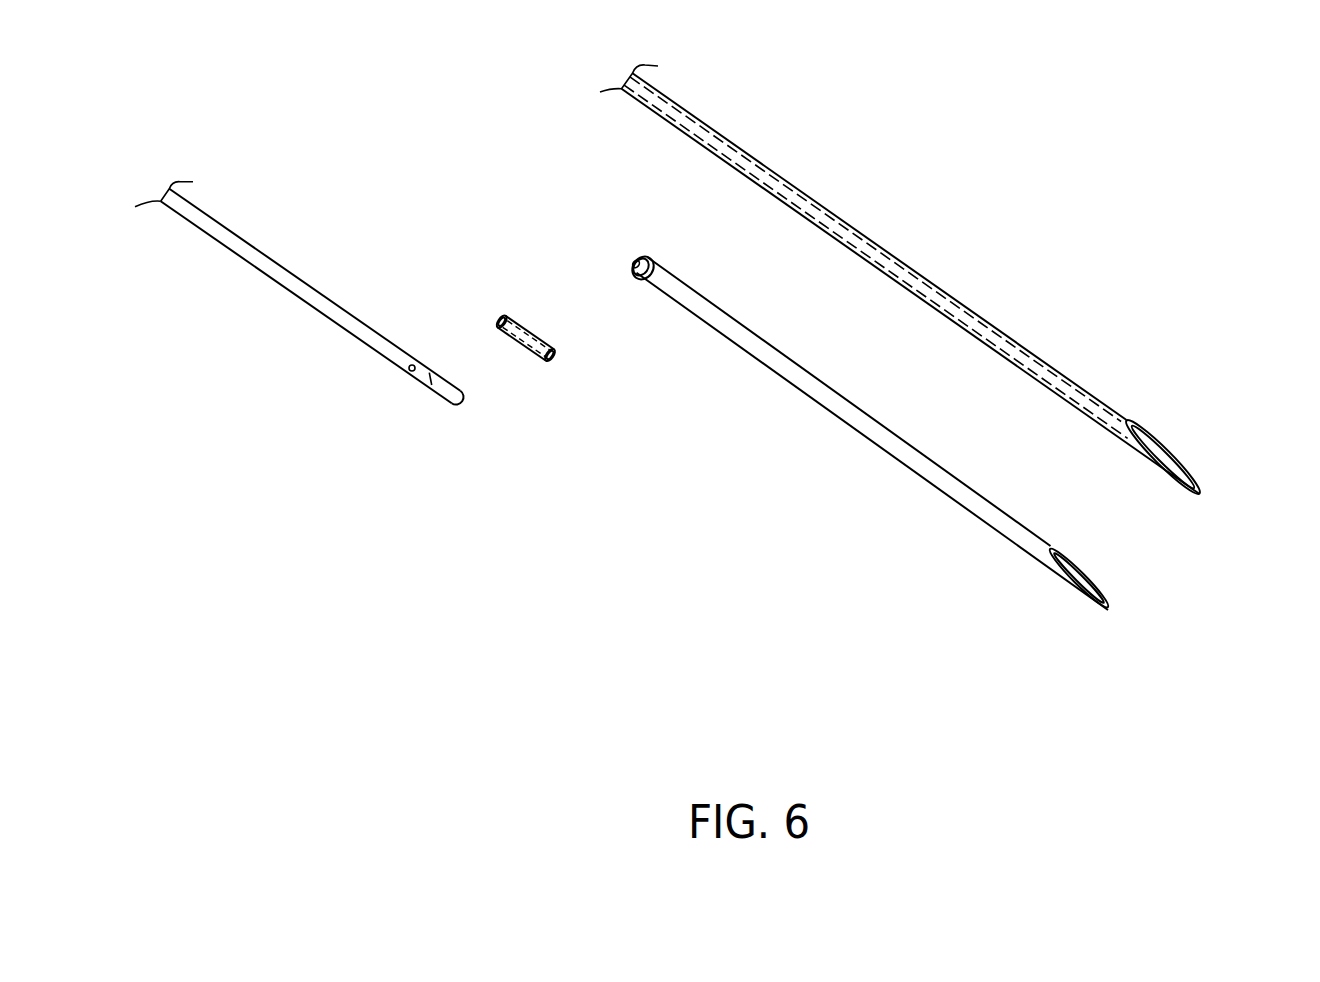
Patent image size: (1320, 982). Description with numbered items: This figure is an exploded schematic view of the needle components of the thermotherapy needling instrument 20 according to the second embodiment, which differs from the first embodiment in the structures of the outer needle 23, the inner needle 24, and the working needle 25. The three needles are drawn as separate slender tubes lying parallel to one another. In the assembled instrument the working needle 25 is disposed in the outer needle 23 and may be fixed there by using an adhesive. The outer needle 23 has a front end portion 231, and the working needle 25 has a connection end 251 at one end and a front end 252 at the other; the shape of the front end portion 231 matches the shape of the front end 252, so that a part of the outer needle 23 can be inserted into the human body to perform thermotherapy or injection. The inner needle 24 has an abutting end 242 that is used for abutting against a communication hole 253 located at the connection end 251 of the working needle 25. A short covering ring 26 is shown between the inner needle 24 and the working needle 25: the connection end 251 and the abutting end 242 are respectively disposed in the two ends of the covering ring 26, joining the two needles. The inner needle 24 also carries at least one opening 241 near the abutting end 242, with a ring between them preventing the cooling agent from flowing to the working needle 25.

The thermotherapy needling instrument 20 is at (1078, 153).
The outer needle 23 is at (893, 263).
The front end portion 231 is at (1200, 488).
The inner needle 24 is at (260, 260).
The opening 241 is at (405, 370).
The abutting end 242 is at (445, 395).
The working needle 25 is at (853, 425).
The connection end 251 is at (647, 268).
The front end 252 is at (1078, 562).
The communication hole 253 is at (630, 260).
The covering ring 26 is at (523, 333).